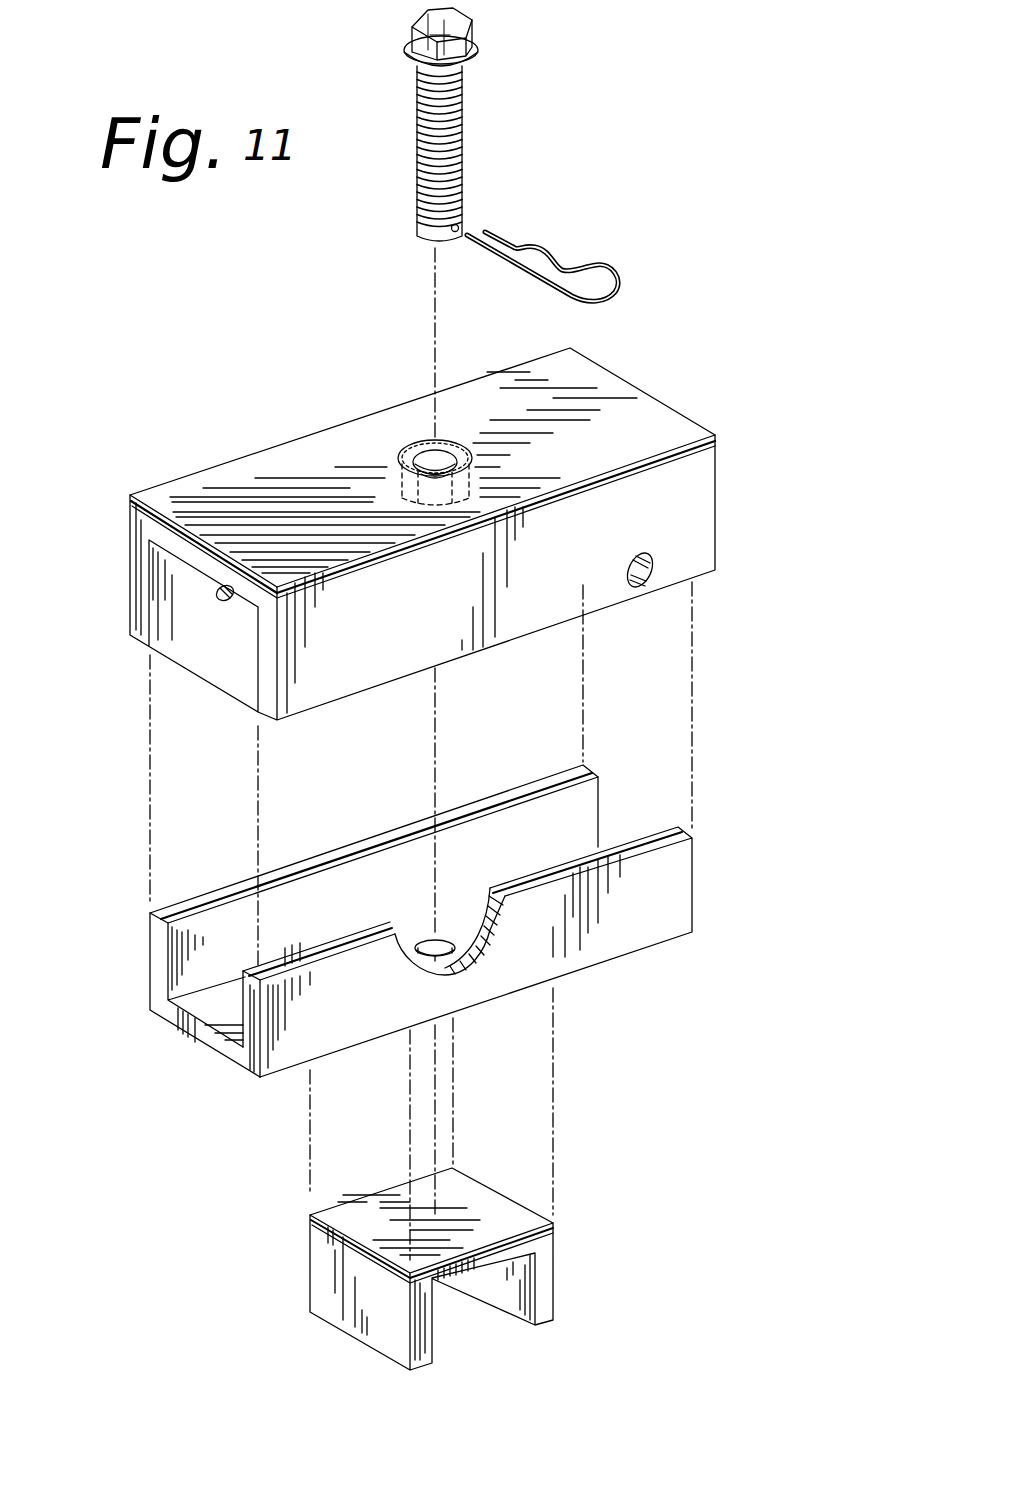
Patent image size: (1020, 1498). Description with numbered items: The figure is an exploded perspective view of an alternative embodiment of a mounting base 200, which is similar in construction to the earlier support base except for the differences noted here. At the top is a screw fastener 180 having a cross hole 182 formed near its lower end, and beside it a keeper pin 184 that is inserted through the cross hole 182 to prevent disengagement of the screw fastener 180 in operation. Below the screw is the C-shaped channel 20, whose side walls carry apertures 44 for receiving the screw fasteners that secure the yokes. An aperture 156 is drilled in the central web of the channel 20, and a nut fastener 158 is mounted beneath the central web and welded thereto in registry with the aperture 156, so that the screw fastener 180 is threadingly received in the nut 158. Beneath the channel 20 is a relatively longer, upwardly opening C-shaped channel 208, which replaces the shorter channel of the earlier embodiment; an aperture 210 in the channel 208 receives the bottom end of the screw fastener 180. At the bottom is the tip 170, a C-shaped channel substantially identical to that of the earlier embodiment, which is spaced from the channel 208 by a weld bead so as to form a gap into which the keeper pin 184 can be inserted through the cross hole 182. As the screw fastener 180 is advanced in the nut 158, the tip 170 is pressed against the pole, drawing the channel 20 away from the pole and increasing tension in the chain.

The screw fastener 180 is at (462, 97).
The cross hole 182 is at (458, 226).
The keeper pin 184 is at (594, 264).
The mounting base 200 is at (636, 375).
The channel 20 is at (422, 548).
The apertures 44 is at (368, 668).
The aperture 156 is at (447, 442).
The nut fastener 158 is at (404, 447).
The C-shaped channel 208 is at (471, 921).
The aperture 210 is at (432, 940).
The tip 170 is at (547, 1266).